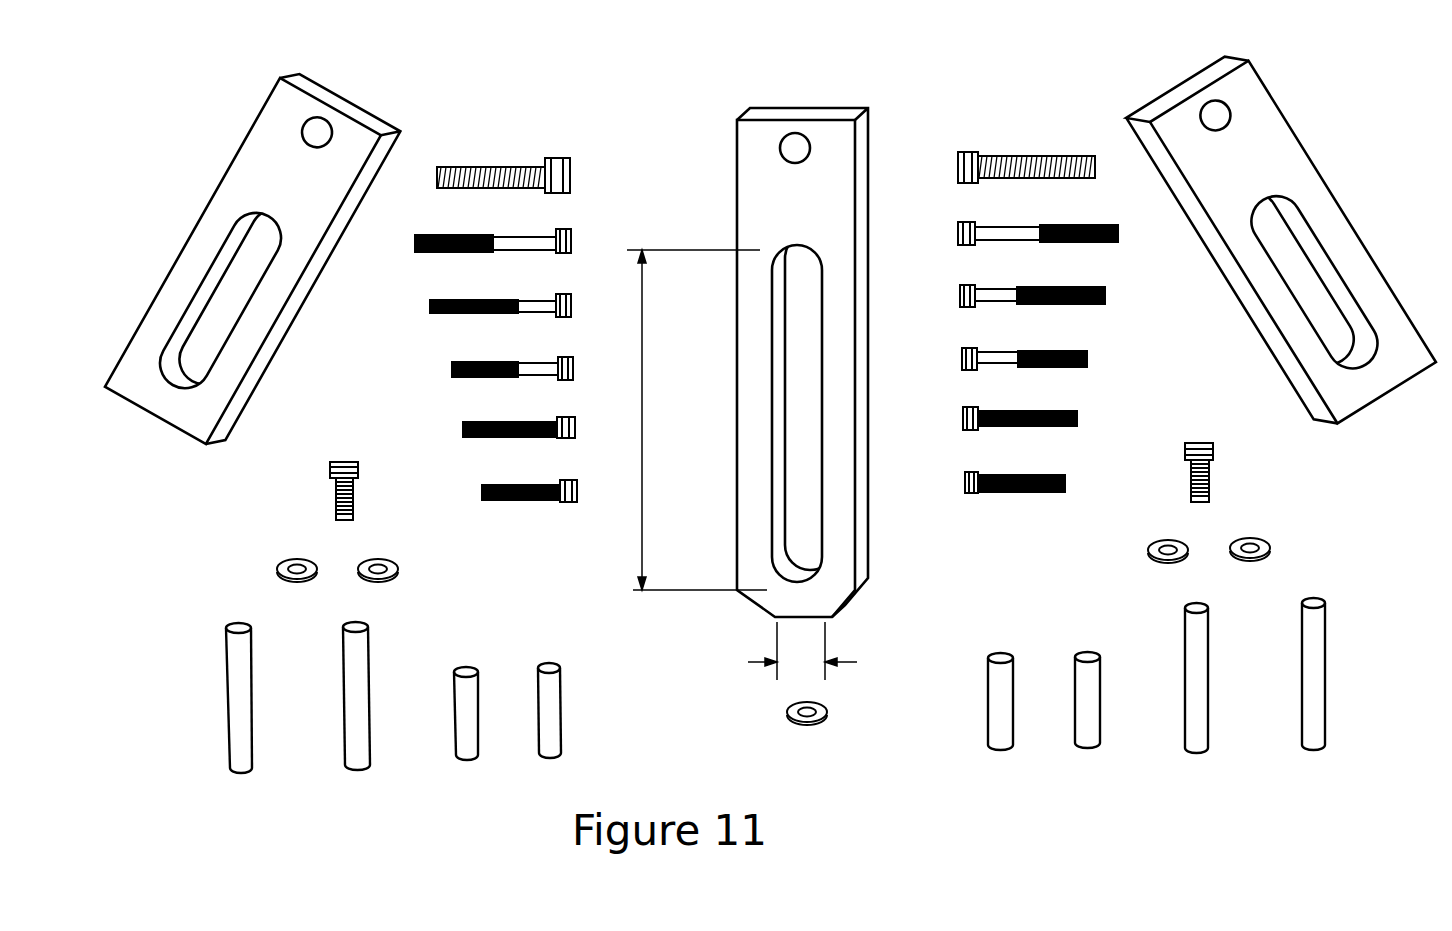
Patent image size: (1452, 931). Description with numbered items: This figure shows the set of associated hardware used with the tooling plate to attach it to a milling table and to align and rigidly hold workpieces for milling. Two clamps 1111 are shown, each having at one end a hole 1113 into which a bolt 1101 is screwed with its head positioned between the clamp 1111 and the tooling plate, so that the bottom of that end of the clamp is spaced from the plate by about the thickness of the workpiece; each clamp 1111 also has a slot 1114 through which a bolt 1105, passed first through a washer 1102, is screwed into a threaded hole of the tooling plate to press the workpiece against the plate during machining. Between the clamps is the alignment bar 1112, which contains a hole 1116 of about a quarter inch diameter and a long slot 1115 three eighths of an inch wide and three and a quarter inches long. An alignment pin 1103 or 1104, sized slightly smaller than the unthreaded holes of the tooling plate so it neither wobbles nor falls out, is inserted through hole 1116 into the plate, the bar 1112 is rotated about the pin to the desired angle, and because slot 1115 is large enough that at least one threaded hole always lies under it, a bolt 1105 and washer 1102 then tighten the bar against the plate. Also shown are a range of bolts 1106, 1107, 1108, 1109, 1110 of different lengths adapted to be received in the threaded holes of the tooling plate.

The bolt 1101 is at (480, 168).
The washer 1102 is at (277, 567).
The alignment pin 1103 is at (238, 763).
The alignment pin 1104 is at (462, 745).
The bolt 1105 is at (333, 501).
The bolt 1106 is at (513, 245).
The bolt 1107 is at (465, 313).
The bolt 1108 is at (477, 377).
The bolt 1109 is at (487, 437).
The bolt 1110 is at (537, 497).
The clamp 1111 is at (275, 137).
The alignment bar 1112 is at (758, 137).
The hole 1113 is at (317, 130).
The slot 1114 is at (228, 303).
The slot 1115 is at (808, 470).
The hole 1116 is at (802, 148).